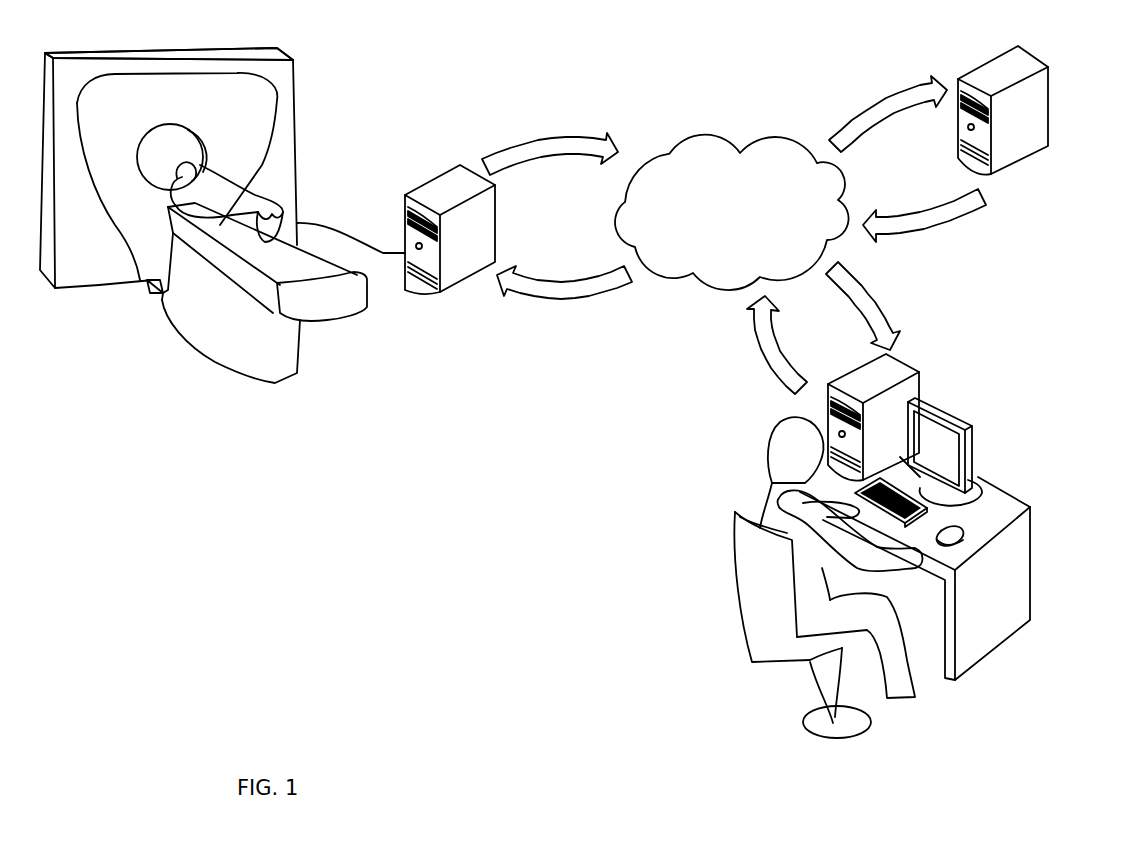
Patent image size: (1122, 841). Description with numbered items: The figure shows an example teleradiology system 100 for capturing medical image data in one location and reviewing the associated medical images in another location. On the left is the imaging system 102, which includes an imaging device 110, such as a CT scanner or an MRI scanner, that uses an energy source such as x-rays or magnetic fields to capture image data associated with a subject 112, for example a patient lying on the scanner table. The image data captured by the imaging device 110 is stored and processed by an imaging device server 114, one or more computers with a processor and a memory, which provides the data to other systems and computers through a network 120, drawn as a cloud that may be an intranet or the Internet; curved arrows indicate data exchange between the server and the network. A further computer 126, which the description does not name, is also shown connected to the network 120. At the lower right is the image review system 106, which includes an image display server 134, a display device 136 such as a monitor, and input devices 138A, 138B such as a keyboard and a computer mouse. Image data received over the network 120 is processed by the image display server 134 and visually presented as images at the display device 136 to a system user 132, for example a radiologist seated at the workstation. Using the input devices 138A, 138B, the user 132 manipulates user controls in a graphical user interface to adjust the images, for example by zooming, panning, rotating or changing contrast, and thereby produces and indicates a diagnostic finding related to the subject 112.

The teleradiology system 100 is at (199, 663).
The imaging system 102 is at (406, 349).
The image review system 106 is at (1007, 360).
The imaging device 110 is at (268, 50).
The subject 112 is at (217, 171).
The imaging device server 114 is at (405, 195).
The network 120 is at (710, 135).
The remote server 126 is at (1017, 48).
The system user 132 is at (773, 436).
The image display server 134 is at (920, 372).
The display device 136 is at (973, 431).
The input device 138A is at (1020, 506).
The input device 138B is at (963, 535).